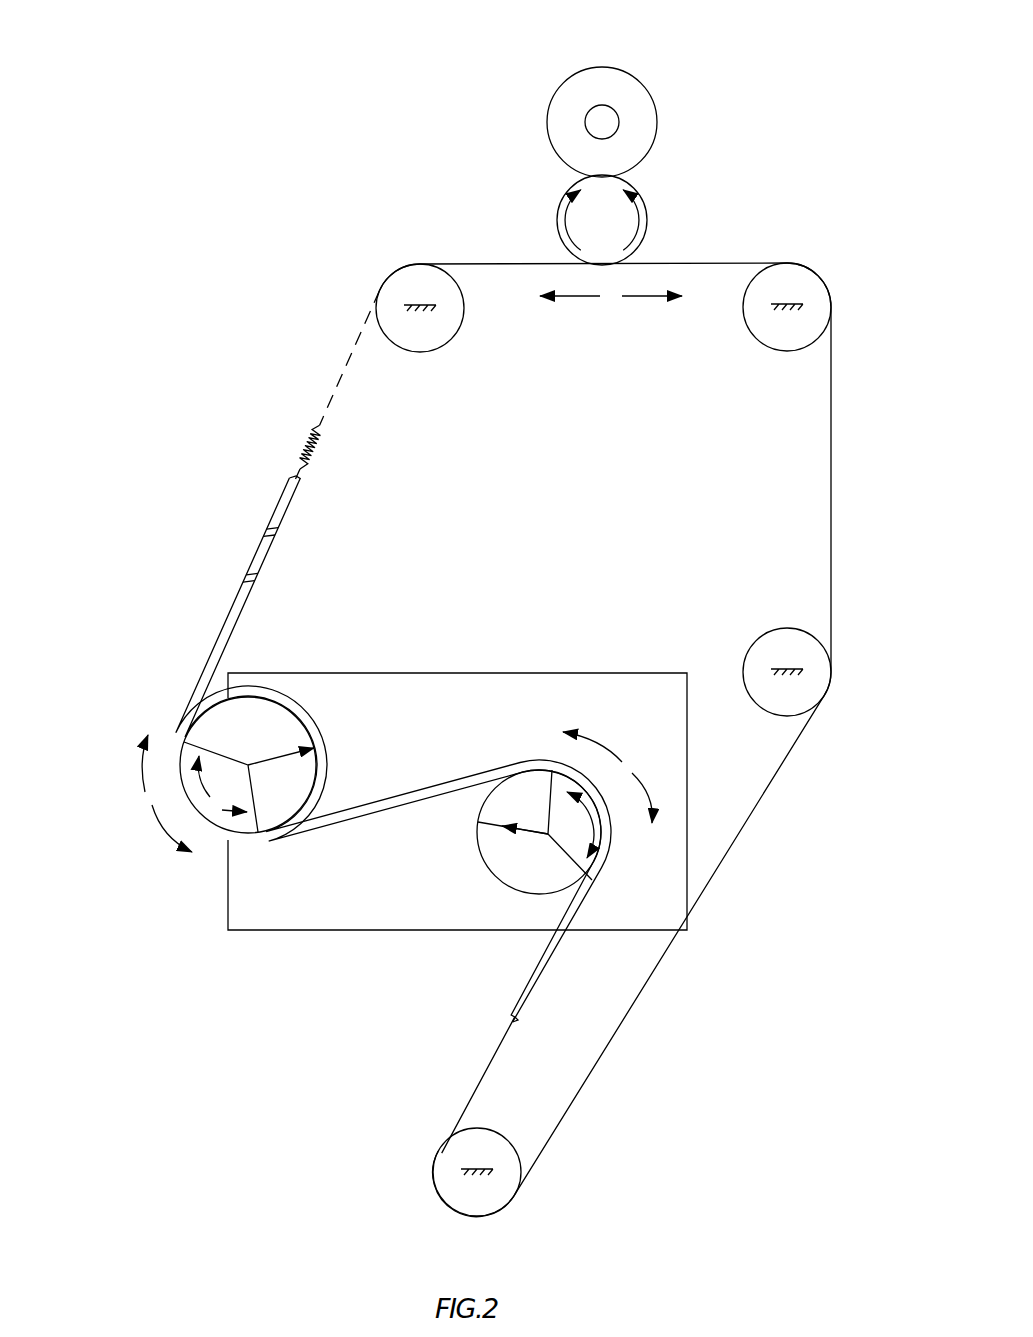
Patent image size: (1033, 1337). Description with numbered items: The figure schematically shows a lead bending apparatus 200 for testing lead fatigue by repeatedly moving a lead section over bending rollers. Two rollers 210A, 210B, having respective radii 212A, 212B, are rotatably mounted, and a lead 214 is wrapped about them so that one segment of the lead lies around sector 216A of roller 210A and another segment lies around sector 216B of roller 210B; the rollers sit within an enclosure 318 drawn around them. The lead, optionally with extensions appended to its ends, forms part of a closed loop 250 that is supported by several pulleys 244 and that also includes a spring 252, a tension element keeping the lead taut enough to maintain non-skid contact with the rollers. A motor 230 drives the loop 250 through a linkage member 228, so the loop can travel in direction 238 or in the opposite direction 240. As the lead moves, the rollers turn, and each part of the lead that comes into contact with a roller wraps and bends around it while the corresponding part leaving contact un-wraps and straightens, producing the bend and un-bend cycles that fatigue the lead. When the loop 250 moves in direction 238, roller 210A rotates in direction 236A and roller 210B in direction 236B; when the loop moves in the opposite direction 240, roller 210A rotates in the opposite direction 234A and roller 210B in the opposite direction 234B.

The lead bending apparatus 200 is at (280, 64).
The motor 230 is at (657, 118).
The linkage member 228 is at (647, 218).
The closed loop 250 is at (831, 462).
The spring 252 is at (303, 456).
The pulleys 244 is at (432, 352).
The direction 238 is at (575, 298).
The opposite direction 240 is at (648, 298).
The housing 318 is at (315, 905).
The lead 214 is at (210, 647).
The roller 210A is at (187, 757).
The radius 212A is at (316, 750).
The sector 216A is at (215, 802).
The direction 234A is at (143, 775).
The direction 236A is at (157, 825).
The roller 210B is at (505, 877).
The radius 212B is at (486, 825).
The sector 216B is at (562, 840).
The direction 234B is at (608, 752).
The direction 236B is at (640, 783).